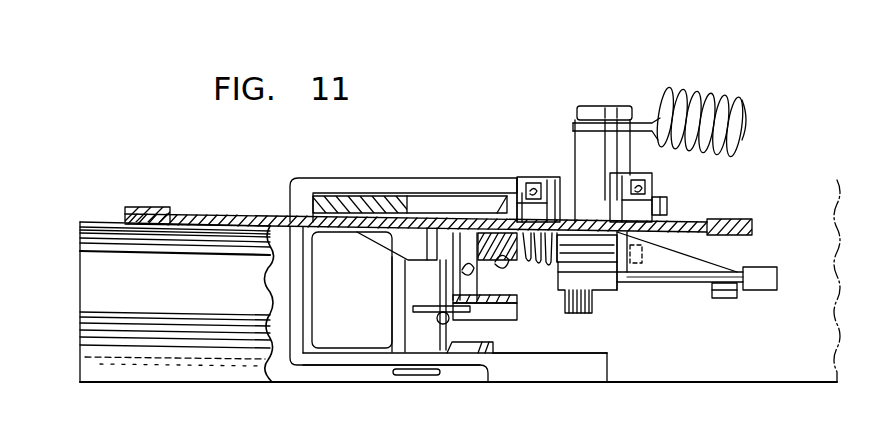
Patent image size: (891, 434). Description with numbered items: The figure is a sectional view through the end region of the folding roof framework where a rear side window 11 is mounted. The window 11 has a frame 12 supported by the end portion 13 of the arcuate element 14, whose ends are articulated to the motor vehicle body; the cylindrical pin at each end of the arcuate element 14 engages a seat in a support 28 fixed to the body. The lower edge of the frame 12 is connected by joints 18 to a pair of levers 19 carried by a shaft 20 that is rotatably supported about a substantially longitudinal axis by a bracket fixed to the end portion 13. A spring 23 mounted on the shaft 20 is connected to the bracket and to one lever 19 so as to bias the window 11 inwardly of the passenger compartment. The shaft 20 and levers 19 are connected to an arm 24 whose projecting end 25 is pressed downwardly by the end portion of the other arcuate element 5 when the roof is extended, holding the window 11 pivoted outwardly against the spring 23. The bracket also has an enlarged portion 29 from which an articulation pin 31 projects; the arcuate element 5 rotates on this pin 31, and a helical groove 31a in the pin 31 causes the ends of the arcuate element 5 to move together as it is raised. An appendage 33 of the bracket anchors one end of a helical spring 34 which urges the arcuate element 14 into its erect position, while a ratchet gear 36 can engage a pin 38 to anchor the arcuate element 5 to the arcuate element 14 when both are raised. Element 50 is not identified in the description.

The arcuate element 5 is at (500, 260).
The rear side window 11 is at (235, 222).
The frame 12 is at (738, 237).
The end portion 13 is at (346, 206).
The arcuate element 14 is at (283, 200).
The joint 18 is at (521, 183).
The lever 19 is at (646, 186).
The shaft 20 is at (587, 254).
The spring 23 is at (520, 250).
The arm 24 is at (679, 262).
The projecting end 25 is at (728, 298).
The support 28 is at (531, 372).
The enlarged portion 29 is at (507, 240).
The articulation pin 31 is at (455, 285).
The helical groove 31a is at (456, 274).
The appendage 33 is at (587, 146).
The helical spring 34 is at (707, 96).
The ratchet gear 36 is at (610, 278).
The pin 38 is at (438, 316).
The end block 50 is at (763, 278).